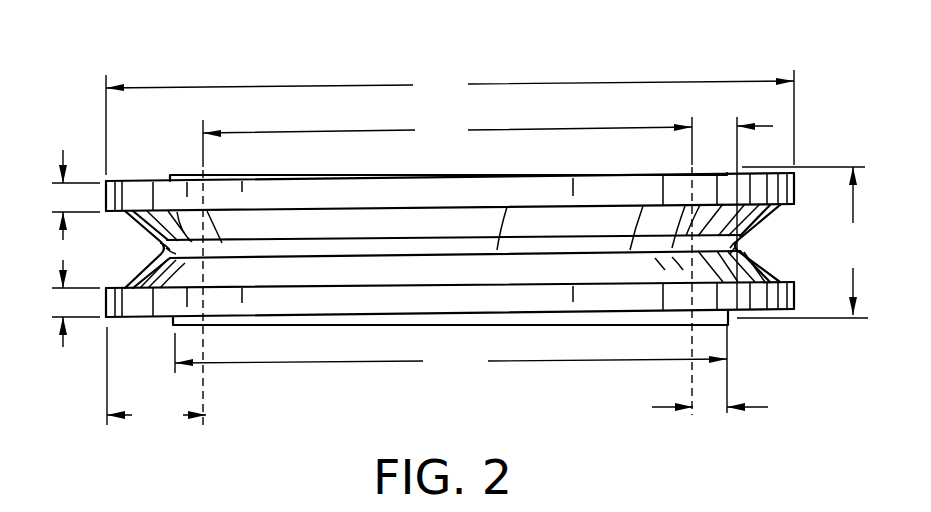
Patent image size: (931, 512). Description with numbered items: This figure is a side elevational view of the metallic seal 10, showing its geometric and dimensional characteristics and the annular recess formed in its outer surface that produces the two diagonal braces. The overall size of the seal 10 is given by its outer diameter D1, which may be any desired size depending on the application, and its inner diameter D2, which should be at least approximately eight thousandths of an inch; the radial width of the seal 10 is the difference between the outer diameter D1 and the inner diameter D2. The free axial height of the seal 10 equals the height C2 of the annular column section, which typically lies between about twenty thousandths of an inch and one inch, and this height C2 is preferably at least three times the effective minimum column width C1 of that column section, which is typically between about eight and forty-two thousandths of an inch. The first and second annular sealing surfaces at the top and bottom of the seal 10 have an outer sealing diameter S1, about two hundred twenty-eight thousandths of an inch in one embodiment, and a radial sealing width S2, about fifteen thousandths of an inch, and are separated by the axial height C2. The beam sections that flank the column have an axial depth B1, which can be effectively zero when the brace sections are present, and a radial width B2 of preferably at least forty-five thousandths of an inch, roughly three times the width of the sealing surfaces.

The seal 10 is at (832, 120).
The outer diameter D1 is at (450, 119).
The inner diameter D2 is at (447, 267).
The effective minimum column width C1 is at (735, 208).
The height of annular column section C2 is at (806, 242).
The axial depth of beam sections B1 is at (59, 248).
The radial width of beam sections B2 is at (156, 384).
The outer sealing diameter S1 is at (451, 369).
The radial sealing width S2 is at (710, 426).